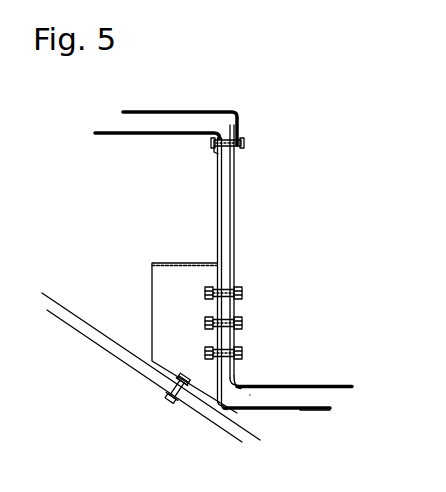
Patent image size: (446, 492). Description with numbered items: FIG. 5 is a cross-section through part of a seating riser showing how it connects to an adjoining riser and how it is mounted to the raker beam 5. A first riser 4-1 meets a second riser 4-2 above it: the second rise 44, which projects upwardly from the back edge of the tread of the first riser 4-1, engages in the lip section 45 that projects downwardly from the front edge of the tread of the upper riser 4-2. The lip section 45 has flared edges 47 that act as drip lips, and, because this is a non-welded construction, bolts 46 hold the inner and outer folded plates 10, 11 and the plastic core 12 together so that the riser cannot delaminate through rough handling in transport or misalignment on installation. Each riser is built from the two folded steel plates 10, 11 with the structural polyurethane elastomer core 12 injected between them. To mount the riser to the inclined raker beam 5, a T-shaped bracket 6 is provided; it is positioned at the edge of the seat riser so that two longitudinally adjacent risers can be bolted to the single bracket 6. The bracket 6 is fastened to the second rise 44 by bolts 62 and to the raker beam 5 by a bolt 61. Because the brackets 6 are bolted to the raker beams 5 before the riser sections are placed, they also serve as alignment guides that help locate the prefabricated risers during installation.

The second riser 4-2 is at (198, 90).
The first riser 4-1 is at (294, 304).
The lip section 45 is at (240, 127).
The bolts 46 is at (214, 146).
The flared edges 47 is at (240, 161).
The second rise 44 is at (237, 192).
The T-shaped bracket 6 is at (161, 262).
The bolts 62 is at (205, 352).
The raker beam 5 is at (80, 334).
The bolts 61 is at (166, 400).
The folded plate 10 is at (333, 384).
The plastic core 12 is at (302, 395).
The folded plate 11 is at (323, 411).